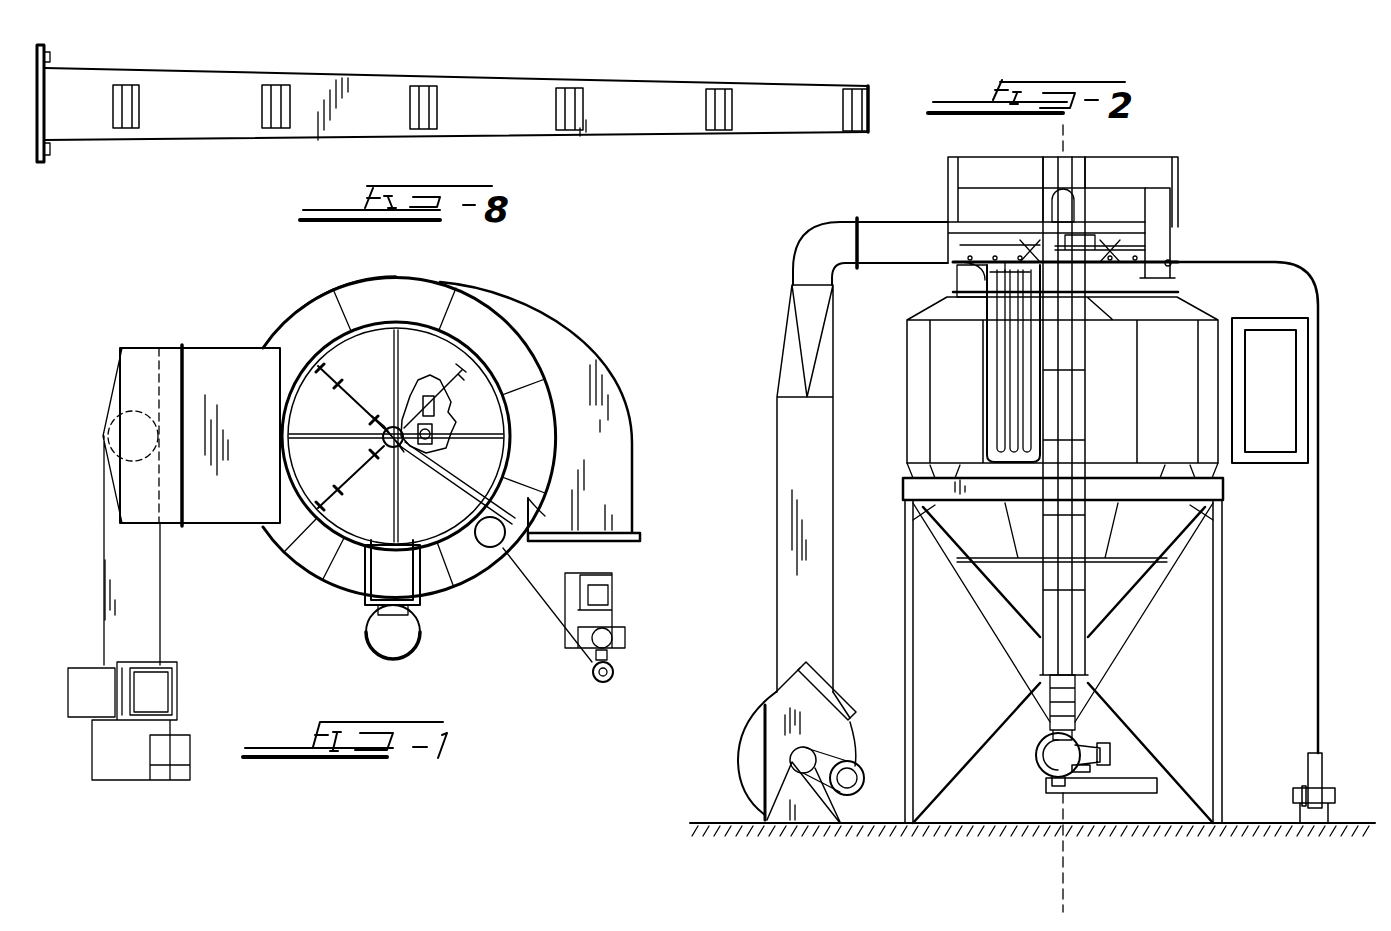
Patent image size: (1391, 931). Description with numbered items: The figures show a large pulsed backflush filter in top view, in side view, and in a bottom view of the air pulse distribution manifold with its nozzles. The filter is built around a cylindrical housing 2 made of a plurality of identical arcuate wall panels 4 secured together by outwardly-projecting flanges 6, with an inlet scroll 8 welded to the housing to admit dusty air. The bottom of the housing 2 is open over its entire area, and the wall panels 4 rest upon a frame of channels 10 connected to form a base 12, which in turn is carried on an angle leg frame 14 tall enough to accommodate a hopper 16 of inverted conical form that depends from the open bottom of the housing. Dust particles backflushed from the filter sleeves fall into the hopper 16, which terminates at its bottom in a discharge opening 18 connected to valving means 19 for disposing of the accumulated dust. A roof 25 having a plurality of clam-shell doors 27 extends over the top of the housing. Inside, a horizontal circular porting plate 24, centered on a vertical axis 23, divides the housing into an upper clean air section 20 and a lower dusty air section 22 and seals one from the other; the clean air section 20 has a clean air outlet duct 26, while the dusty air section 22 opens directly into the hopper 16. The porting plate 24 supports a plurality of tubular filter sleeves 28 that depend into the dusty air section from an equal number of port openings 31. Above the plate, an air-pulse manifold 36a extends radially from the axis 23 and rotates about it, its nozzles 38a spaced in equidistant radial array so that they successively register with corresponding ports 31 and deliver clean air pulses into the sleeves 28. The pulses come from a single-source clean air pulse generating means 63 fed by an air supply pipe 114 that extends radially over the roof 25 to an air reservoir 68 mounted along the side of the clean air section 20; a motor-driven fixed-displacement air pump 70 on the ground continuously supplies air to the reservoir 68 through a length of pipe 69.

In FIG. 8, the air-pulse manifold 36a is at (547, 78).
In FIG. 8, the nozzles 38a is at (263, 113).
In FIG. 1, the cylindrical housing 2 is at (298, 299).
In FIG. 1, the arcuate wall panels 4 is at (415, 280).
In FIG. 1, the outwardly-projecting flanges 6 is at (342, 300).
In FIG. 1, the inlet scroll 8 is at (600, 373).
In FIG. 2, the inlet scroll 8 is at (1296, 325).
In FIG. 1, the clean air outlet duct 26 is at (238, 347).
In FIG. 2, the clean air outlet duct 26 is at (852, 222).
In FIG. 1, the clam-shell doors 27 is at (372, 376).
In FIG. 1, the clean air pulse generating means 63 is at (393, 437).
In FIG. 1, the roof 25 is at (343, 520).
In FIG. 1, the air reservoir 68 is at (505, 540).
In FIG. 2, the air reservoir 68 is at (1163, 222).
In FIG. 1, the pipe 69 is at (538, 598).
In FIG. 2, the pipe 69 is at (1320, 460).
In FIG. 1, the air pump 70 is at (622, 632).
In FIG. 2, the air pump 70 is at (1330, 790).
In FIG. 1, the air supply pipe 114 is at (535, 503).
In FIG. 2, the axis 23 is at (1068, 152).
In FIG. 2, the clean air section 20 is at (1127, 242).
In FIG. 2, the port openings 31 is at (1005, 270).
In FIG. 2, the porting plate 24 is at (882, 226).
In FIG. 2, the dusty air section 22 is at (975, 278).
In FIG. 2, the tubular filter sleeves 28 is at (1010, 335).
In FIG. 2, the base 12 is at (879, 463).
In FIG. 2, the channels 10 is at (1225, 488).
In FIG. 2, the angle leg frame 14 is at (1238, 629).
In FIG. 2, the hopper 16 is at (1120, 650).
In FIG. 2, the discharge opening 18 is at (1072, 746).
In FIG. 2, the valving means 19 is at (1040, 762).